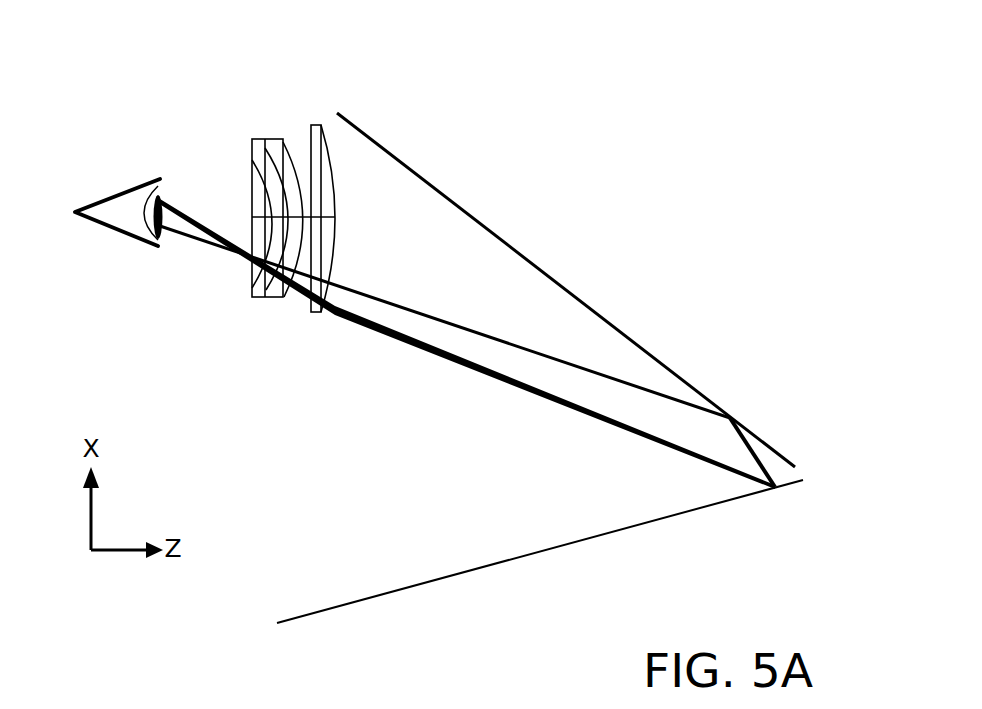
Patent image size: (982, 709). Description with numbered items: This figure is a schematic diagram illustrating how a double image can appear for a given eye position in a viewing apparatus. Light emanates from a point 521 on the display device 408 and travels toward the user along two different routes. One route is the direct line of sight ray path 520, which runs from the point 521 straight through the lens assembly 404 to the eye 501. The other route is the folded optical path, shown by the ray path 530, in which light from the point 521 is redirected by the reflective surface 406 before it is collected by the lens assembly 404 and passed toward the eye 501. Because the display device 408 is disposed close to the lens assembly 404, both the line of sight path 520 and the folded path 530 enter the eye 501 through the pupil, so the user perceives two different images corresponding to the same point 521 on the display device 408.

The eye 501 is at (108, 198).
The lens assembly 404 is at (272, 128).
The reflective surface 406 is at (437, 188).
The display device 408 is at (540, 553).
The line of sight ray path 520 is at (528, 393).
The point on the display device 521 is at (775, 487).
The folded optical path ray path 530 is at (358, 283).